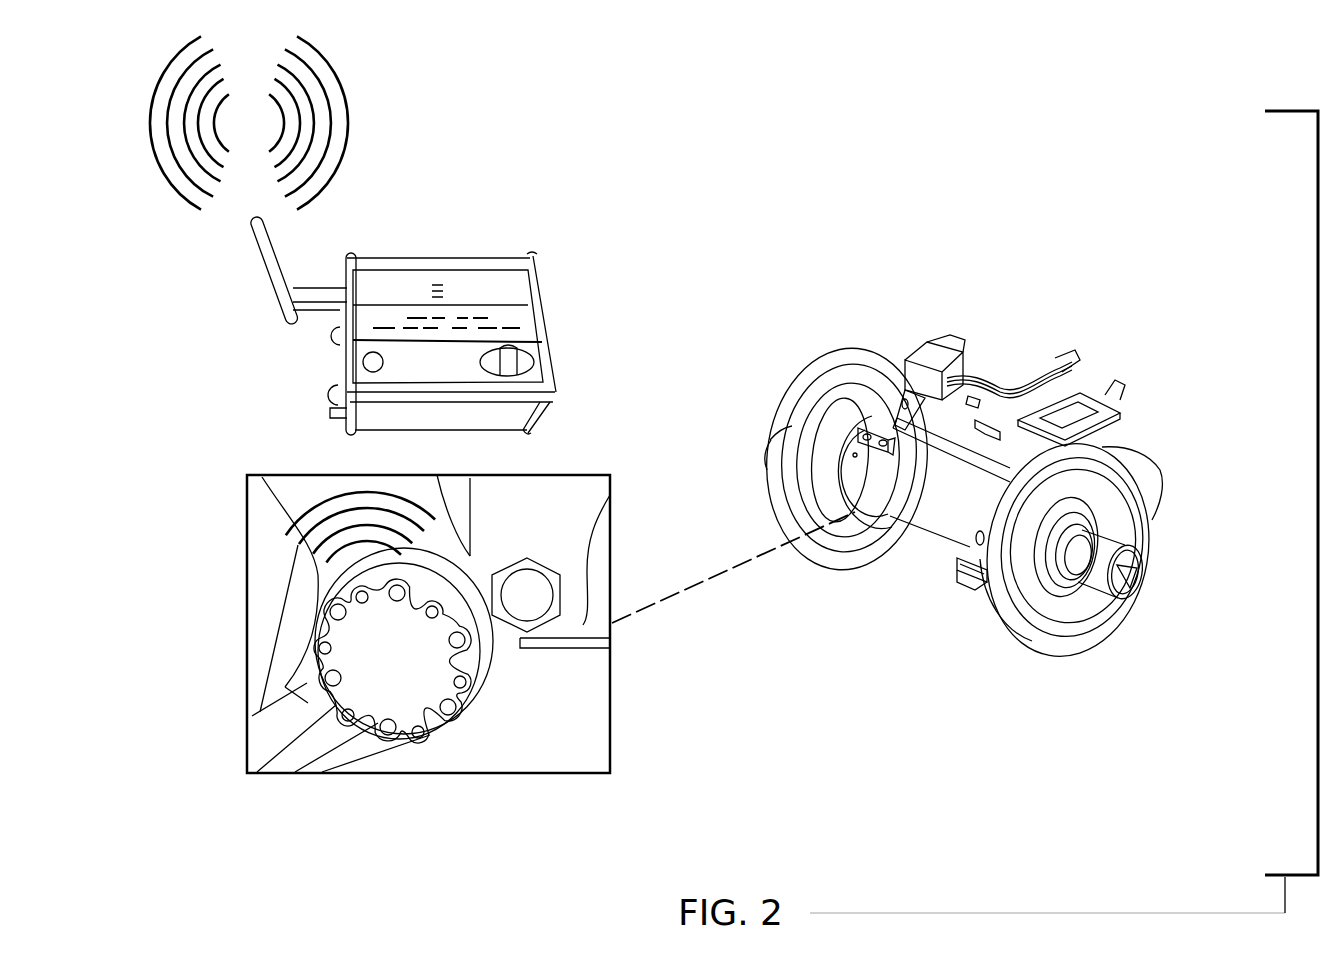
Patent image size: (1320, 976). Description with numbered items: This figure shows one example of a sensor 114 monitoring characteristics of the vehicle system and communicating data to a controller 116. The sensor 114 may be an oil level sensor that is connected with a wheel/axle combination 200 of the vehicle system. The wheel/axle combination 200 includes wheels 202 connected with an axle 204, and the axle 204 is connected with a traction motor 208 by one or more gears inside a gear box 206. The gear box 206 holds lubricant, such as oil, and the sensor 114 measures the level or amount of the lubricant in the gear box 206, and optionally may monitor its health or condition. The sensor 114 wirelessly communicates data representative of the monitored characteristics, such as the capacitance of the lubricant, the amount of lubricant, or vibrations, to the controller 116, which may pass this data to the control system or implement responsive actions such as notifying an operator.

The sensor 114 is at (445, 718).
The controller 116 is at (488, 265).
The wheel/axle combination 200 is at (1158, 678).
The wheels 202 is at (1107, 642).
The axle 204 is at (1103, 547).
The gear box 206 is at (962, 600).
The traction motor 208 is at (970, 403).